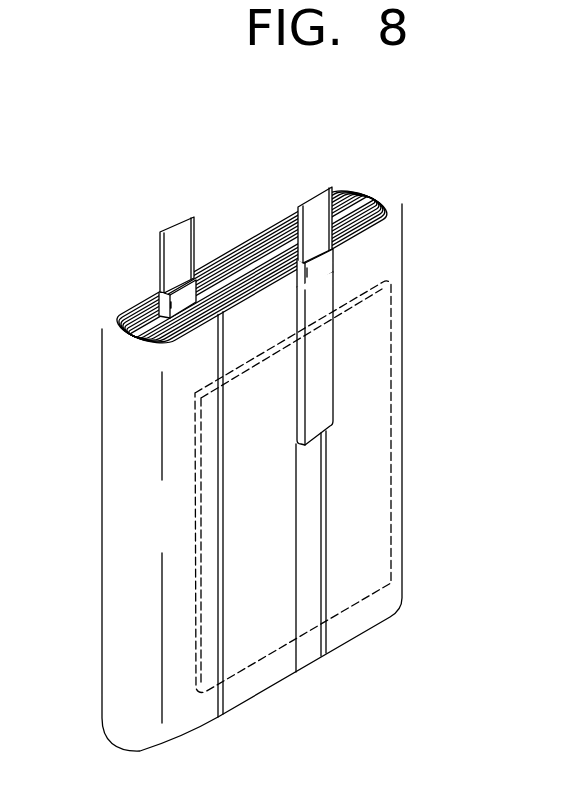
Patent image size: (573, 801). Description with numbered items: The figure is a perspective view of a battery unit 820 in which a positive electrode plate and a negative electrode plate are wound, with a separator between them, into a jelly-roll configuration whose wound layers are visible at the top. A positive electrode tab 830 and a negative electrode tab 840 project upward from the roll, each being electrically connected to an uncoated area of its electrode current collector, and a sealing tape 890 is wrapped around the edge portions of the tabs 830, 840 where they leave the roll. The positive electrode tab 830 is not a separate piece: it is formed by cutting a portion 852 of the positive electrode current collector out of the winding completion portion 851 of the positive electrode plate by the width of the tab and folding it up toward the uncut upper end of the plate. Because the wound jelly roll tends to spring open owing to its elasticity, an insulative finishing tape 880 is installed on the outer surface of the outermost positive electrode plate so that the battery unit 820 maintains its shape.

The battery unit 820 is at (120, 377).
The positive electrode tab 830 is at (310, 201).
The negative electrode tab 840 is at (182, 224).
The winding completion portion 851 is at (365, 612).
The cut portion of the positive electrode current collector 852 is at (322, 399).
The finishing tape 880 is at (365, 347).
The sealing tape 890 is at (335, 258).